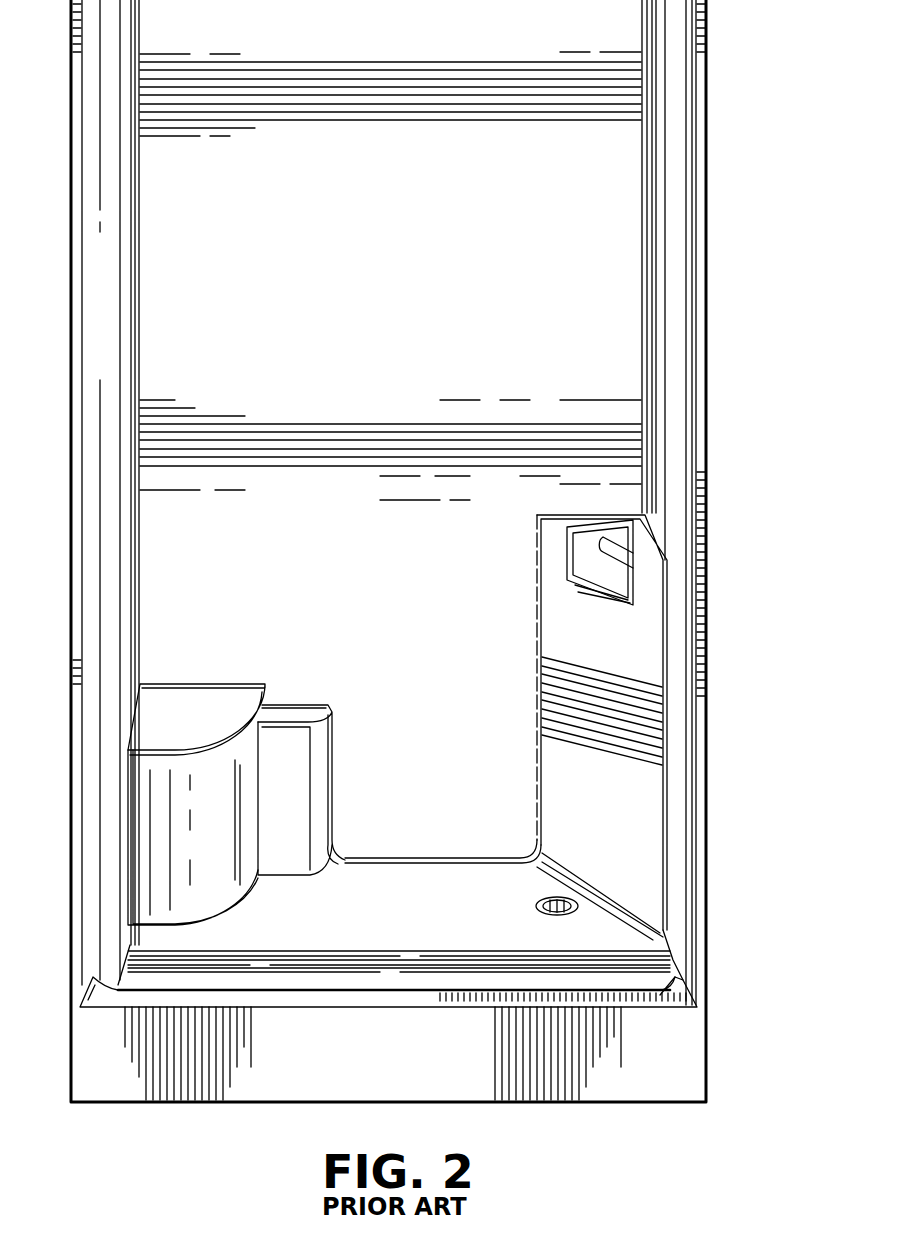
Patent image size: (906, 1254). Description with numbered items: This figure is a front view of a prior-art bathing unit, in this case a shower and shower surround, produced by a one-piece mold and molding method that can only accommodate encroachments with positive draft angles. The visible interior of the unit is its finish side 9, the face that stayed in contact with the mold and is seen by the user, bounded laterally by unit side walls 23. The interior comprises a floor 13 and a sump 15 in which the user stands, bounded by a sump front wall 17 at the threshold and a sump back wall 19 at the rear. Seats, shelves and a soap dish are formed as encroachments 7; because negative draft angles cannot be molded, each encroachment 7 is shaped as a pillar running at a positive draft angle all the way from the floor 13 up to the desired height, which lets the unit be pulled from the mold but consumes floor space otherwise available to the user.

The encroachments 7 is at (614, 546).
The finish side 9 is at (617, 312).
The floor 13 is at (453, 880).
The sump 15 is at (605, 936).
The sump front wall 17 is at (437, 985).
The sump back wall 19 is at (520, 835).
The unit side walls 23 is at (667, 453).